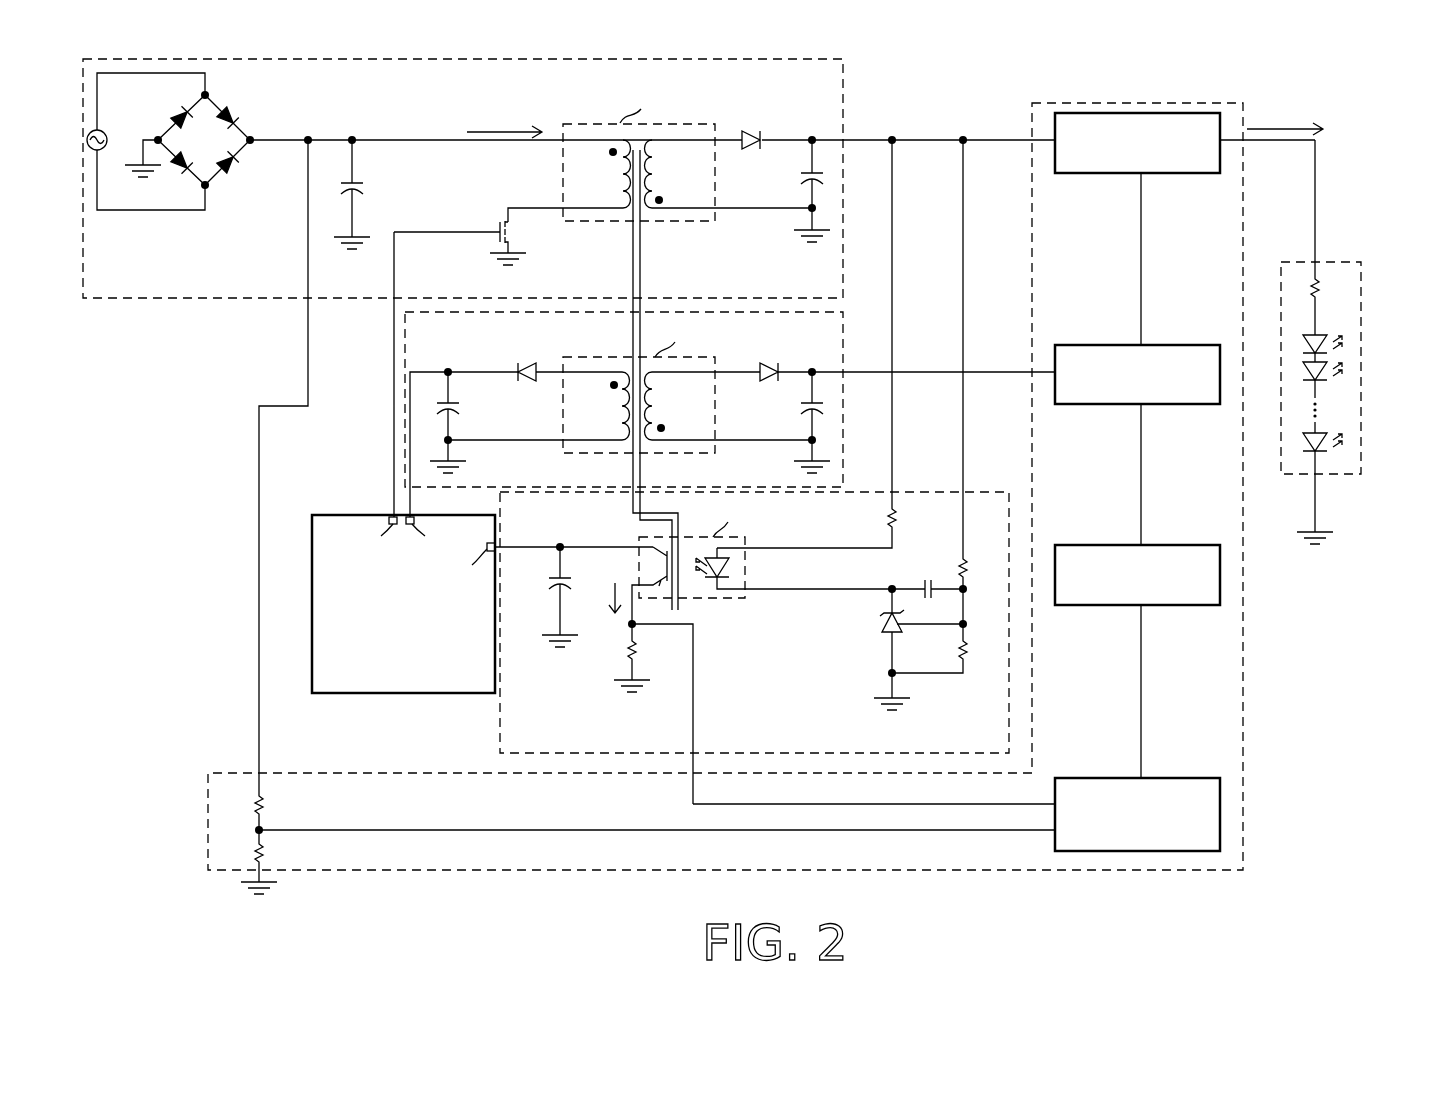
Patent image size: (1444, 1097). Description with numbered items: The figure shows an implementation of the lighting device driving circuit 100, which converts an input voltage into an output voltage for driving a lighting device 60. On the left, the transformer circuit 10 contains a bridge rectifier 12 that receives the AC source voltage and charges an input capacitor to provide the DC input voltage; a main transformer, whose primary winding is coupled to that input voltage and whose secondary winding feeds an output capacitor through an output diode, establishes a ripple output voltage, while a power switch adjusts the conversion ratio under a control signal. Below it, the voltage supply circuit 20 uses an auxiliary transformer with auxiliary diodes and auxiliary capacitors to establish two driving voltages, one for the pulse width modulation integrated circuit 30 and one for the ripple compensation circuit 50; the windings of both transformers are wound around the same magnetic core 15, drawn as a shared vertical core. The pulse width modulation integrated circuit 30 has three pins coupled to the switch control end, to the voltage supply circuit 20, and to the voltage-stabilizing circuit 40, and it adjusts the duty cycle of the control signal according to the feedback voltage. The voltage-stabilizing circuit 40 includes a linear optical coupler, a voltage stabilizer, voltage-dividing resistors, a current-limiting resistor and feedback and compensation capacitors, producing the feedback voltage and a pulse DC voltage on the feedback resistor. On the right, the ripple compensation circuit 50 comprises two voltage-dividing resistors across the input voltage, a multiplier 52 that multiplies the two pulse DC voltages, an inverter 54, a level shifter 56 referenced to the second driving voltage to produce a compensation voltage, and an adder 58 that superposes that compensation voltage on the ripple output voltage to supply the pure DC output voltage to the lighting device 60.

The lighting device driving circuit 100 is at (763, 488).
The transformer circuit 10 is at (487, 178).
The bridge rectifier 12 is at (228, 96).
The magnetic core 15 is at (641, 269).
The voltage supply circuit 20 is at (843, 330).
The pulse width modulation integrated circuit (PWM IC) 30 is at (390, 693).
The voltage-stabilizing circuit 40 is at (983, 493).
The ripple compensation circuit 50 is at (749, 499).
The multiplier 52 is at (1160, 778).
The inverter 54 is at (1160, 545).
The level shifter 56 is at (1173, 345).
The adder 58 is at (1173, 112).
The lighting device 60 is at (1358, 262).